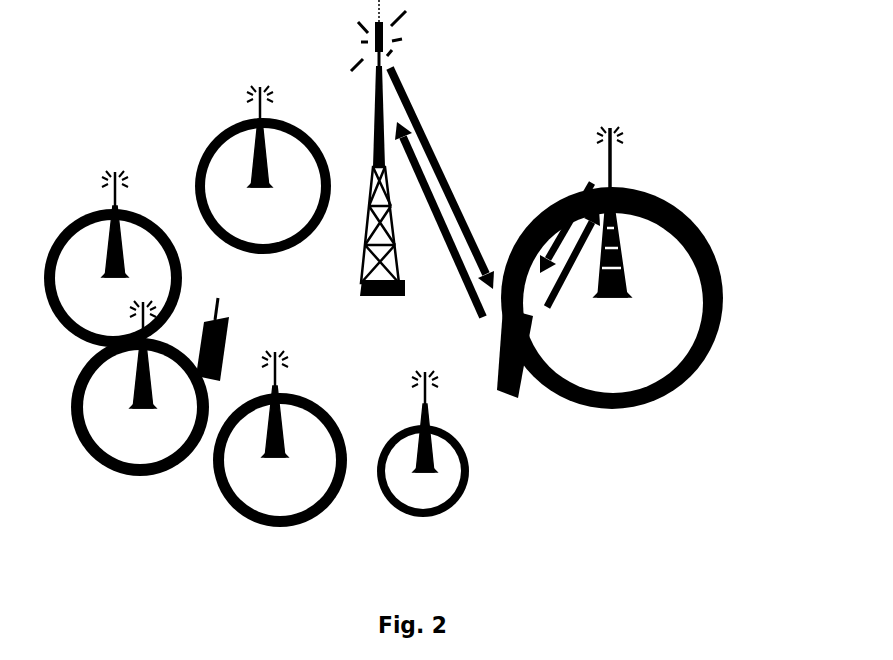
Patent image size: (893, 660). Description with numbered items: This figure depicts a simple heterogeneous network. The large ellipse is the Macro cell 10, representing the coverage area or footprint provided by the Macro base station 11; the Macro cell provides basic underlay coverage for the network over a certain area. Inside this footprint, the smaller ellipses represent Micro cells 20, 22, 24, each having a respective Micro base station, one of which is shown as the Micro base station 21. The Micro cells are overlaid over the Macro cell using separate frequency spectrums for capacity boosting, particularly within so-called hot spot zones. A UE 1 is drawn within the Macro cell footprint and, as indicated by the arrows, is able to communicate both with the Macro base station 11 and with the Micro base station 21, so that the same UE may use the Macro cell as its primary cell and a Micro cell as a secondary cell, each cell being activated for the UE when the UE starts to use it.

The Macro cell 10 is at (399, 316).
The Macro base station 11 is at (419, 168).
The Micro cell 20 is at (619, 298).
The Micro base station 21 is at (585, 236).
The Micro cell 22 is at (434, 473).
The Micro cell 24 is at (274, 460).
The UE 1 is at (523, 377).